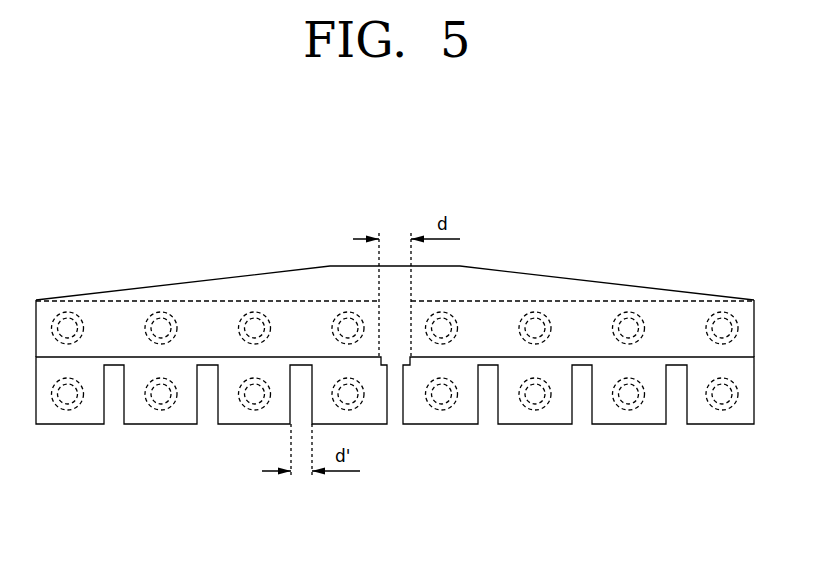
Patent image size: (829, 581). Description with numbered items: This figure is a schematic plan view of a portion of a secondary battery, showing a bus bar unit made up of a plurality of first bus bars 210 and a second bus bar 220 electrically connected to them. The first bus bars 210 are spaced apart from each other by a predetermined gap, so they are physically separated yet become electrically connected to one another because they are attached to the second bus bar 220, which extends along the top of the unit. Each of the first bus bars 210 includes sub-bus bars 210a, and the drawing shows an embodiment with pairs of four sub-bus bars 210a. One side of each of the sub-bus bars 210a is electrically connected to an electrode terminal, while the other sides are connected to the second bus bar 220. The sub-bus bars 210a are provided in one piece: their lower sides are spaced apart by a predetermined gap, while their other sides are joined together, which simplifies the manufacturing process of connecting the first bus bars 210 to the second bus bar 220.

The second bus bar 220 is at (350, 272).
The first bus bars 210 is at (721, 496).
The sub-bus bars 210a is at (440, 424).